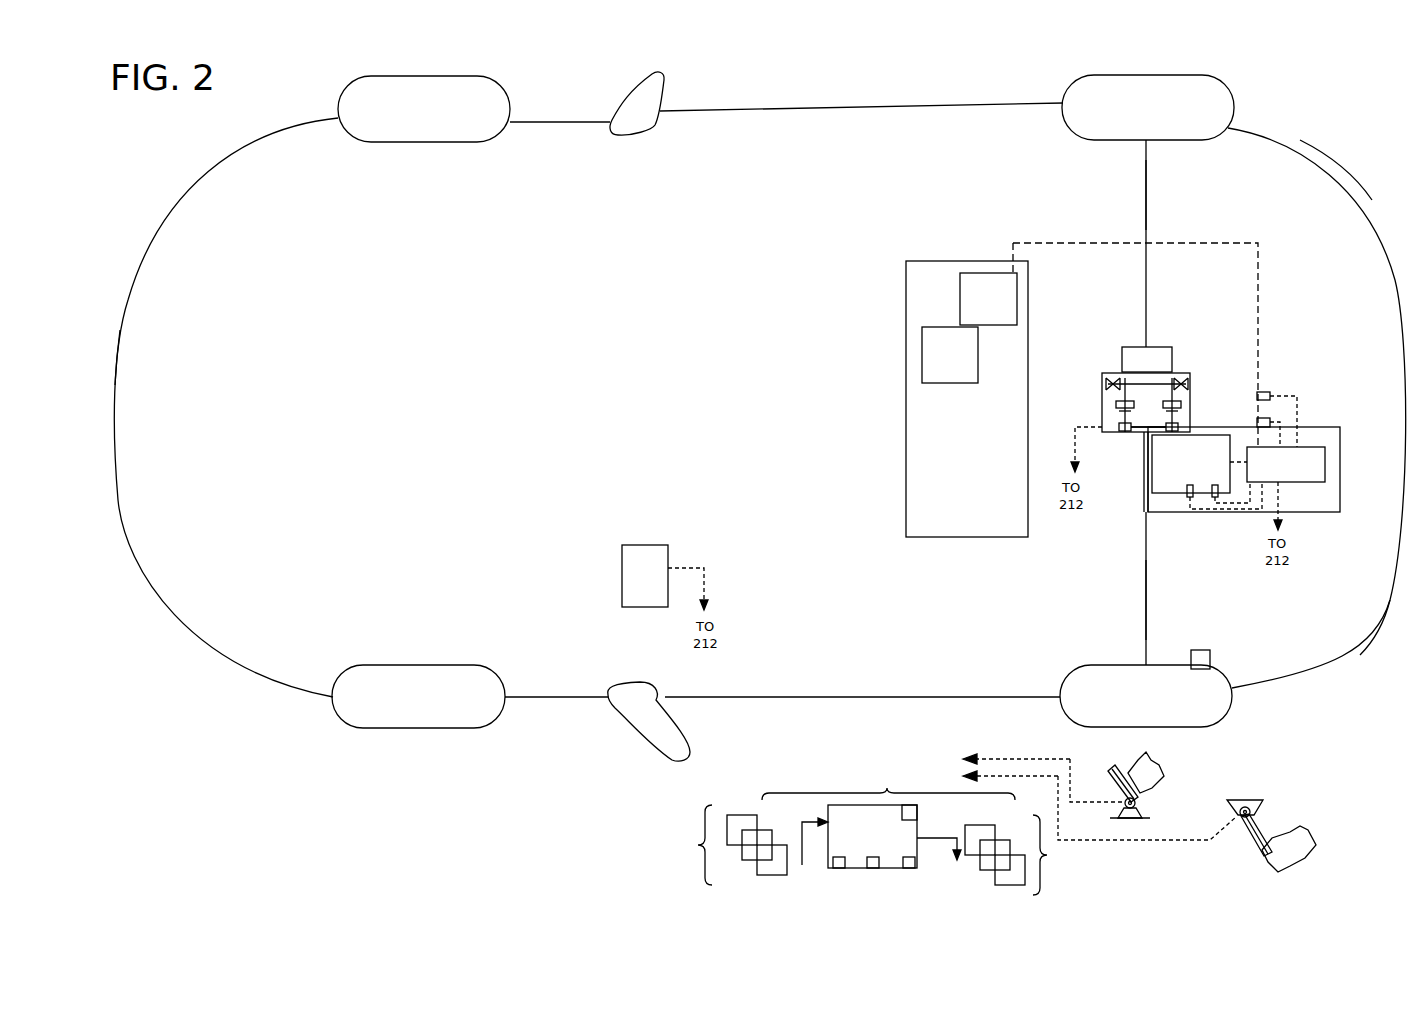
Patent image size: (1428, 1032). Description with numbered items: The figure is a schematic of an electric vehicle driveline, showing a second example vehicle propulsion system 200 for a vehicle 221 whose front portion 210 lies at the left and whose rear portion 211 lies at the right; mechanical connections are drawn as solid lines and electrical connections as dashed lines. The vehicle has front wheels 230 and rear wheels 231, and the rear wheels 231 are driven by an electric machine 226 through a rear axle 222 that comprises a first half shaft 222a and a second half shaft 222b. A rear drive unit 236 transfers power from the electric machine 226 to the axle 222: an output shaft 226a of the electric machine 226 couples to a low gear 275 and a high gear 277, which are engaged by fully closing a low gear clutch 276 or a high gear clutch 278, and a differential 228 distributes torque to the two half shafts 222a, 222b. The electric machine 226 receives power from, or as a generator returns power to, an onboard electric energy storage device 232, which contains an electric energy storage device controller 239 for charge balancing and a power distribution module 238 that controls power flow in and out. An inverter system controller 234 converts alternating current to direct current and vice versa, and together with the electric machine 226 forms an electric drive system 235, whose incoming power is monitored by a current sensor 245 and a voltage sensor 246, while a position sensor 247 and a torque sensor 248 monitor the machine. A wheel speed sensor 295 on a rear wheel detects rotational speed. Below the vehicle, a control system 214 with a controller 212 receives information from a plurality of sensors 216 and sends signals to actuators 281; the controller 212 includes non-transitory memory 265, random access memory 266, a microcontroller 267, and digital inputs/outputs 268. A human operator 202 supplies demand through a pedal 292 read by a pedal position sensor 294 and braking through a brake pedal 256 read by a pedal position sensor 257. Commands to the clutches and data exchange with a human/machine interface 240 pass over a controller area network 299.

The vehicle propulsion system 200 is at (896, 92).
The human operator 202 is at (1144, 772).
The front portion 210 is at (138, 210).
The rear portion 211 is at (1366, 158).
The controller 212 is at (881, 836).
The control system 214 is at (932, 825).
The sensors 216 is at (708, 845).
The vehicle 221 is at (1348, 692).
The rear axle 222 is at (1180, 210).
The first half shaft 222a is at (1147, 192).
The second half shaft 222b is at (1147, 597).
The electric machine 226 is at (1191, 464).
The output shaft 226a is at (1138, 433).
The differential 228 is at (1147, 359).
The front wheels 230 is at (439, 76).
The rear wheels 231 is at (1182, 75).
The electric energy storage device 232 is at (985, 447).
The inverter system controller 234 is at (1277, 464).
The electric drive system 235 is at (1340, 427).
The rear drive unit 236 is at (1193, 356).
The power distribution module 238 is at (988, 299).
The electric energy storage device controller 239 is at (950, 355).
The human/machine interface 240 is at (664, 587).
The current sensor 245 is at (1189, 498).
The voltage sensor 246 is at (1216, 498).
The position sensor 247 is at (1271, 393).
The torque sensor 248 is at (1295, 420).
The brake pedal 256 is at (1266, 856).
The pedal position sensor 257 is at (1236, 802).
The non-transitory memory 265 is at (835, 869).
The random access memory 266 is at (871, 869).
The microcontroller 267 is at (908, 869).
The digital inputs/outputs 268 is at (918, 815).
The low gear 275 is at (1098, 386).
The low gear clutch 276 is at (1108, 406).
The high gear 277 is at (1188, 390).
The high gear clutch 278 is at (1184, 406).
The actuators 281 is at (1046, 855).
The pedal 292 is at (1112, 790).
The pedal position sensor 294 is at (1137, 804).
The wheel speed sensor 295 is at (1203, 650).
The controller area network 299 is at (689, 578).